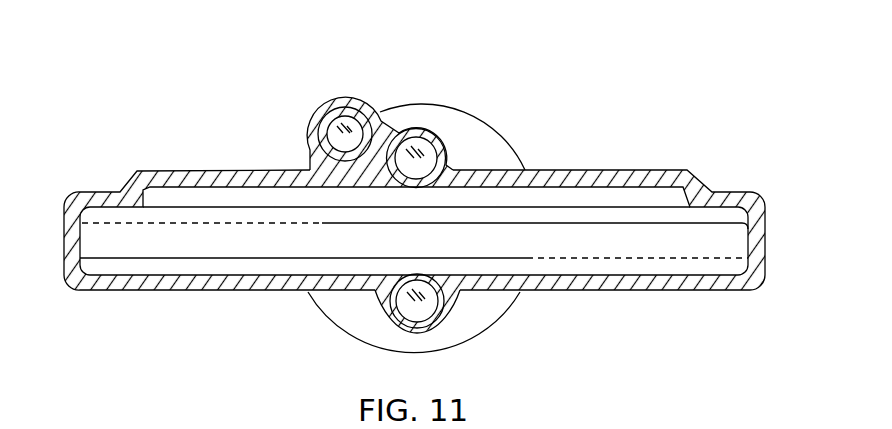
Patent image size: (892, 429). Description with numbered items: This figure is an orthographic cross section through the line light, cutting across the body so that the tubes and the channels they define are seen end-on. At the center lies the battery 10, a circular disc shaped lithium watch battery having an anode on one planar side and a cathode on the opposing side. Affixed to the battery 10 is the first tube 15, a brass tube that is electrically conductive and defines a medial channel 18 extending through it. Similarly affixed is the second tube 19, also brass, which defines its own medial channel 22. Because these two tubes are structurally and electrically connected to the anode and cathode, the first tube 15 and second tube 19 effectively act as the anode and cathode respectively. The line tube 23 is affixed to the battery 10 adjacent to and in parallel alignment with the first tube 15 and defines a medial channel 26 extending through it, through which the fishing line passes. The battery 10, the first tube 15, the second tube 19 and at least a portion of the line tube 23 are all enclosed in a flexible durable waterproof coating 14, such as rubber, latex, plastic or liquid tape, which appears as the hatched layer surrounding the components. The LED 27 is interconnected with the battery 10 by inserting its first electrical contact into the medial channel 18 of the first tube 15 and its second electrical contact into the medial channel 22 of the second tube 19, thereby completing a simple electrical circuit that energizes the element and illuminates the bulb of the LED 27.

The battery 10 is at (188, 168).
The flexible durable waterproof coating 14 is at (154, 289).
The first tube 15 is at (406, 118).
The medial channel 18 is at (421, 147).
The second tube 19 is at (384, 327).
The medial channel 22 is at (447, 305).
The line tube 23 is at (340, 91).
The medial channel 26 is at (303, 133).
The LED 27 is at (507, 122).